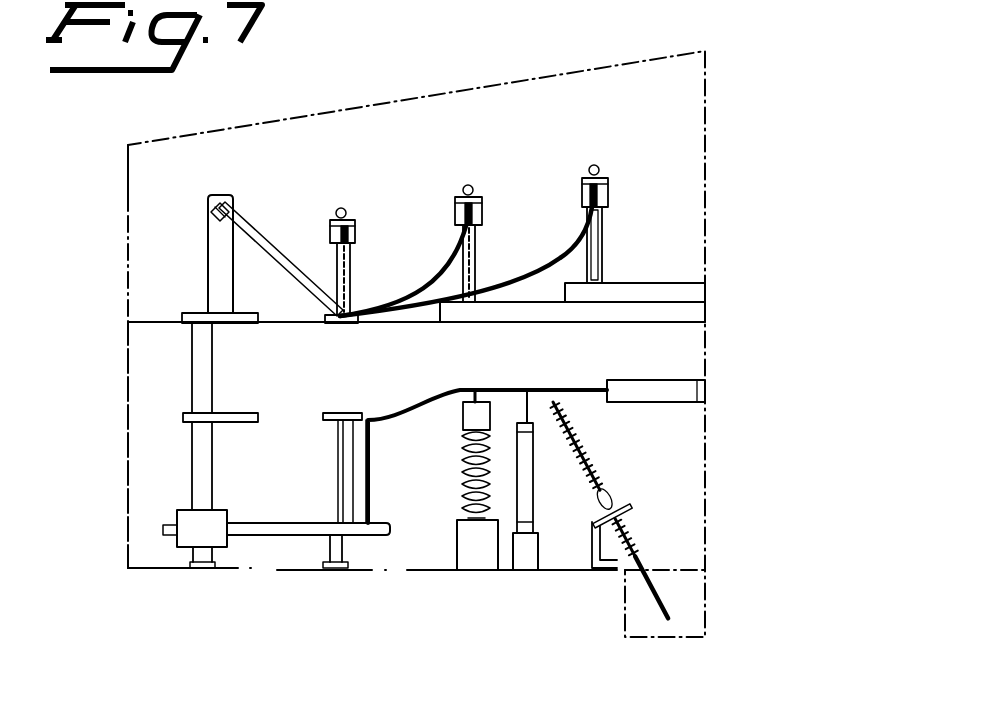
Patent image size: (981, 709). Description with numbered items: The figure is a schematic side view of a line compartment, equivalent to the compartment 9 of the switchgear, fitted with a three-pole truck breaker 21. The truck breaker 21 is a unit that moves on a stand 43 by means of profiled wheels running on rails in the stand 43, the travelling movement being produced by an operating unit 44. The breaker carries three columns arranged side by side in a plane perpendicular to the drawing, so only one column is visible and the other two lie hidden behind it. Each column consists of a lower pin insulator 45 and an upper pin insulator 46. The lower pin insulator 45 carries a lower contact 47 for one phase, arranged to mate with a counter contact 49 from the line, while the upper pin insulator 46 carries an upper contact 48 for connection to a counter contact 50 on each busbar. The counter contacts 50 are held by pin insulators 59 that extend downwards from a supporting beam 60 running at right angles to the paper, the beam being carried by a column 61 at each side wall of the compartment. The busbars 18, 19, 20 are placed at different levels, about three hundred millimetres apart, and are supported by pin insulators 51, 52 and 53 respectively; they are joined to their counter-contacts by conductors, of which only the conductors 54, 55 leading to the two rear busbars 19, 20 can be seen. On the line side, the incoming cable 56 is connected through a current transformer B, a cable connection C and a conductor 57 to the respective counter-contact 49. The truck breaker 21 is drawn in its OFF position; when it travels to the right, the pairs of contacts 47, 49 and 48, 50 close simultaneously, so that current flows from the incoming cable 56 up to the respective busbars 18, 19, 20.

The compartment 9 is at (120, 157).
The busbar 18 is at (341, 207).
The busbar 19 is at (468, 184).
The busbar 20 is at (594, 164).
The three-pole truck breaker 21 is at (123, 413).
The stand 43 is at (267, 536).
The operating unit 44 is at (193, 540).
The lower pin insulator 45 is at (198, 472).
The upper pin insulator 46 is at (193, 353).
The lower contact 47 is at (255, 411).
The upper contact 48 is at (248, 328).
The counter contact 49 is at (325, 413).
The counter contact 50 is at (353, 325).
The pin insulator 51 is at (352, 270).
The pin insulator 52 is at (478, 245).
The pin insulator 53 is at (605, 228).
The conductor 54 is at (447, 262).
The conductor 55 is at (575, 237).
The incoming cable 56 is at (667, 598).
The conductor 57 is at (405, 416).
The pin insulator 59 is at (255, 242).
The supporting beam 60 is at (210, 210).
The column 61 is at (212, 250).
The current transformer B is at (636, 532).
The cable connection C is at (585, 450).